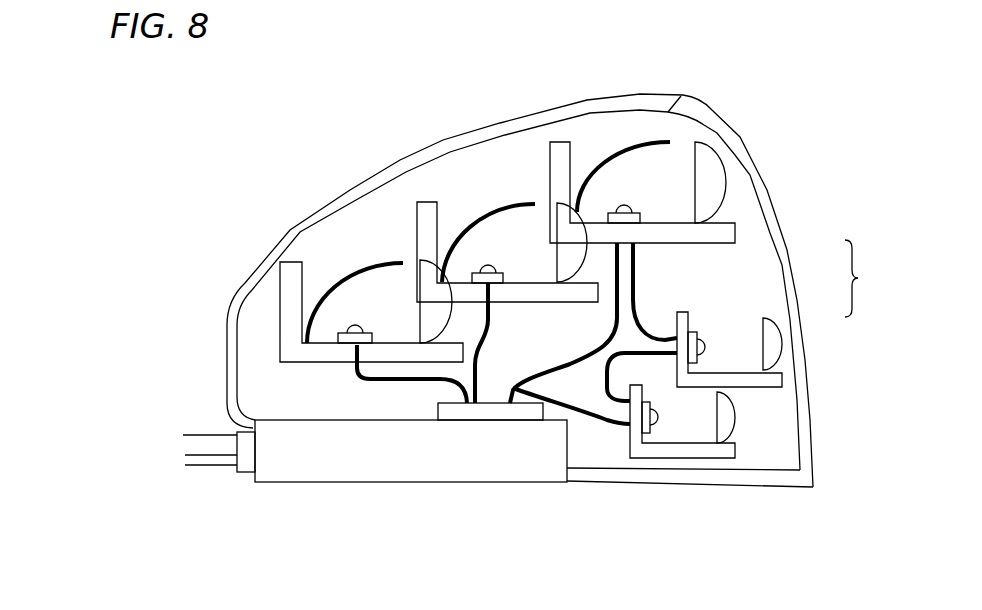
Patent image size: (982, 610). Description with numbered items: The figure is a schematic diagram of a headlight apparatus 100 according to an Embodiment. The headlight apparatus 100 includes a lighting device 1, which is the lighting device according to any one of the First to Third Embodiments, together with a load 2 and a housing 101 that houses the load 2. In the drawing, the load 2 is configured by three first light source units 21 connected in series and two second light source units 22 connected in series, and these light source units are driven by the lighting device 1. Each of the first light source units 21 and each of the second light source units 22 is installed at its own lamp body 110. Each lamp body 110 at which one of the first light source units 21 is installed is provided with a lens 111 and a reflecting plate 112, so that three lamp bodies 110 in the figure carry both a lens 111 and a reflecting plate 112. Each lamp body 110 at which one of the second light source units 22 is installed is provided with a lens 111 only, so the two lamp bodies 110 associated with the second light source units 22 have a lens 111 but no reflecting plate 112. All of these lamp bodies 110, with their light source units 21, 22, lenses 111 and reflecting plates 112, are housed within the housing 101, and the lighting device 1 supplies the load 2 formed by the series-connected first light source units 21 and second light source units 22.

The lighting device 1 is at (348, 484).
The load 2 is at (875, 291).
The first light source unit 21 is at (350, 327).
The second light source unit 22 is at (706, 342).
The headlight apparatus 100 is at (568, 104).
The housing 101 is at (758, 170).
The lamp body 110 is at (407, 352).
The lens 111 is at (433, 292).
The reflecting plate 112 is at (336, 282).